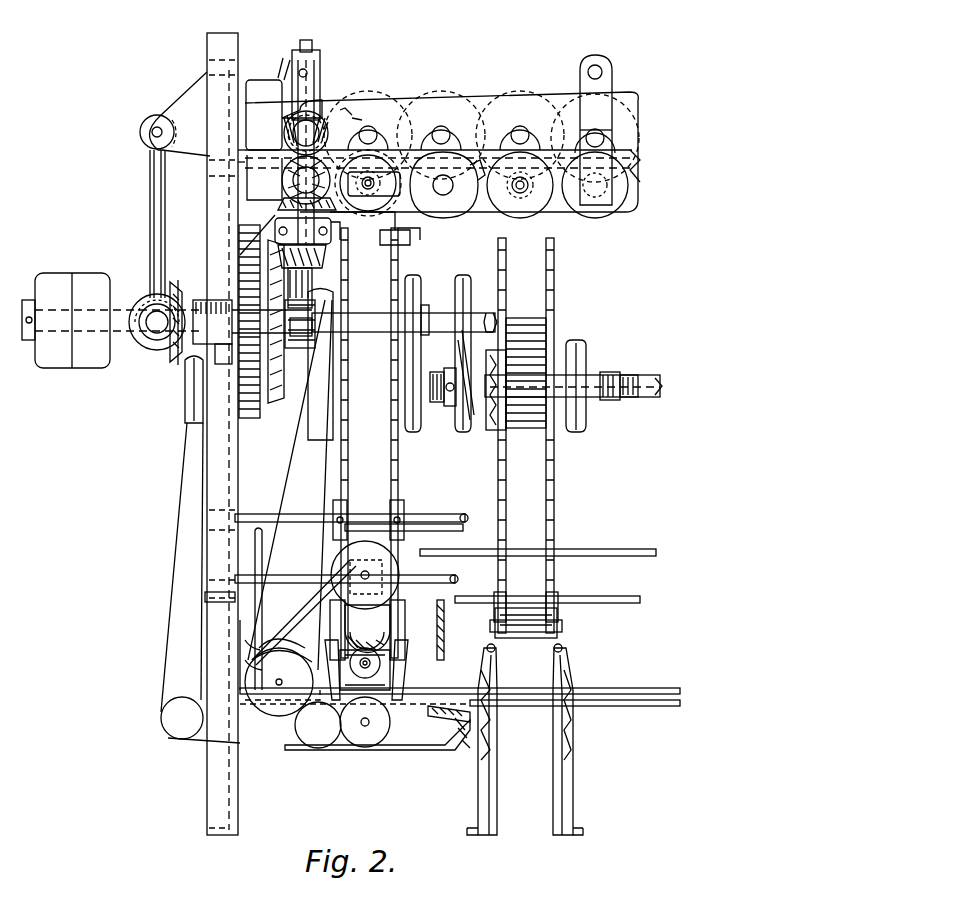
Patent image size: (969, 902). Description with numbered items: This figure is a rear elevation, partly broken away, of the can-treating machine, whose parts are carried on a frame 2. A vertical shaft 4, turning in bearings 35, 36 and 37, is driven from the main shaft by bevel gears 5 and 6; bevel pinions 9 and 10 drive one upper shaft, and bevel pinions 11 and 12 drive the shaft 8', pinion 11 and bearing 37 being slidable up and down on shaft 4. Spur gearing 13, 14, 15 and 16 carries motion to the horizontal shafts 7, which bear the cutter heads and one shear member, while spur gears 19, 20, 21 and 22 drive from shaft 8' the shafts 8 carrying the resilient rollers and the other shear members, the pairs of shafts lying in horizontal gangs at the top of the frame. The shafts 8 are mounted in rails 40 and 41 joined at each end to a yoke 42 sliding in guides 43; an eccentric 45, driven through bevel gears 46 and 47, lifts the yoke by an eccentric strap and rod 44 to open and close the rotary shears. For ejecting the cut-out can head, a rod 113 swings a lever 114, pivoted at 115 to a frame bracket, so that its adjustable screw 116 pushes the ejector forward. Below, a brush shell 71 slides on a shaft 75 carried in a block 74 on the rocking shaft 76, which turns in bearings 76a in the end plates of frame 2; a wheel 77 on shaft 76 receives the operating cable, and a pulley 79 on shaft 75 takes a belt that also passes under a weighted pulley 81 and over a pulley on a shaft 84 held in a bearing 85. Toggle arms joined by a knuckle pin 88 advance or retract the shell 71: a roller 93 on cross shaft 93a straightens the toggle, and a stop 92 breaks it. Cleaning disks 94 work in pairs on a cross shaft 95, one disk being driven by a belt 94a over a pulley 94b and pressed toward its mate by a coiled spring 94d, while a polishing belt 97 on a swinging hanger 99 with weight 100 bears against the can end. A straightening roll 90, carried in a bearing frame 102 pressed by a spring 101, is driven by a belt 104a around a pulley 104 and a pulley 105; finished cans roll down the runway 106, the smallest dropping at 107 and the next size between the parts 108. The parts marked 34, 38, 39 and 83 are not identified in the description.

The frame 2 is at (238, 470).
The vertical shaft 4 is at (305, 276).
The bevel gear 5 is at (278, 392).
The bevel gear 6 is at (325, 250).
The shaft 7 is at (373, 184).
The shaft 8 is at (441, 159).
The shaft 8' is at (287, 133).
The bevel pinion 9 is at (280, 216).
The bevel pinion 10 is at (290, 185).
The bevel pinion 11 is at (281, 67).
The bevel pinion 12 is at (285, 122).
The spur gear 13 is at (290, 176).
The spur gear 14 is at (372, 212).
The spur gear 15 is at (447, 218).
The spur gear 16 is at (524, 218).
The spur gear 19 is at (334, 115).
The spur gear 20 is at (378, 103).
The spur gear 21 is at (448, 100).
The spur gear 22 is at (520, 103).
The gear 34 is at (247, 415).
The bearing 35 is at (295, 338).
The bearing 36 is at (333, 232).
The bearing 37 is at (316, 68).
The roller 38 is at (575, 225).
The frame end 39 is at (592, 222).
The rail 40 is at (345, 115).
The rail 41 is at (356, 122).
The yoke 42 is at (185, 103).
The guides 43 is at (220, 37).
The eccentric strap and rod 44 is at (163, 220).
The eccentric 45 is at (157, 348).
The bevel gear 46 is at (186, 362).
The bevel gear 47 is at (148, 338).
The brush shell 71 is at (395, 615).
The bearing block 74 is at (355, 578).
The shaft 75 is at (366, 573).
The shaft 76 is at (295, 566).
The bearings 76a is at (206, 597).
The wheel 77 is at (290, 480).
The pulley 79 is at (396, 567).
The pulley 81 is at (335, 615).
The shaft 83 is at (282, 713).
The shaft 84 is at (278, 688).
The bearing 85 is at (247, 609).
The knuckle pin 88 is at (273, 644).
The straightening roll 90 is at (385, 678).
The stop 92 is at (405, 632).
The roller 93 is at (405, 503).
The cross shaft 93a is at (445, 514).
The cleaning disks 94 is at (349, 268).
The belt 94a is at (415, 305).
The pulley 94b is at (418, 354).
The coiled spring 94d is at (446, 408).
The cross shaft 95 is at (648, 397).
The cleaning or polishing belt 97 is at (530, 515).
The swinging hanger 99 is at (494, 594).
The weight 100 is at (562, 634).
The spring 101 is at (300, 745).
The bearing frame 102 is at (288, 740).
The pulley 104 is at (378, 667).
The belt 104a is at (165, 681).
The pulley 105 is at (355, 754).
The runway 106 is at (564, 648).
The runway section 107 is at (572, 670).
The runway parts 108 is at (575, 692).
The rod 113 is at (602, 70).
The lever 114 is at (615, 82).
The pivot 115 is at (433, 257).
The adjustable screw 116 is at (375, 185).